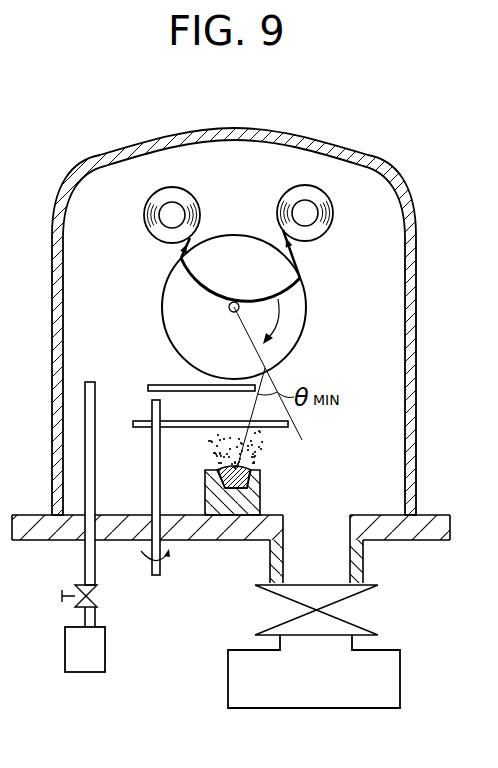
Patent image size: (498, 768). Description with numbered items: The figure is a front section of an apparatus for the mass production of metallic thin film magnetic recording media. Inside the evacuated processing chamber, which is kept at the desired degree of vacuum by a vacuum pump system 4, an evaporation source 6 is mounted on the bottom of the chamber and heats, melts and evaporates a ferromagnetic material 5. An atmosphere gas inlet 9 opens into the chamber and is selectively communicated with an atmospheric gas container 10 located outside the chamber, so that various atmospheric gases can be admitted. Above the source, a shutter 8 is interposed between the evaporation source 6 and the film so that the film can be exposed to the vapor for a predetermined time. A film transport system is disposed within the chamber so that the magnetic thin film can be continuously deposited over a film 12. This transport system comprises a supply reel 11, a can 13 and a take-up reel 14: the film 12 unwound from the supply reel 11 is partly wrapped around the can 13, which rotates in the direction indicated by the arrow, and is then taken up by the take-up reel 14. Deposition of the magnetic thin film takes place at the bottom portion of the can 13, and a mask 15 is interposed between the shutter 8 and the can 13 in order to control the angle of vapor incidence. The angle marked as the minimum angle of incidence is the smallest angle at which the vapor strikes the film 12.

The vacuum pump system 4 is at (323, 693).
The ferromagnetic material 5 is at (220, 472).
The evaporation source 6 is at (260, 490).
The shutter 8 is at (282, 428).
The atmosphere gas inlet 9 is at (95, 392).
The atmospheric gas container 10 is at (82, 667).
The supply reel 11 is at (293, 196).
The film 12 is at (292, 252).
The can 13 is at (236, 240).
The take-up reel 14 is at (178, 198).
The mask 15 is at (160, 385).